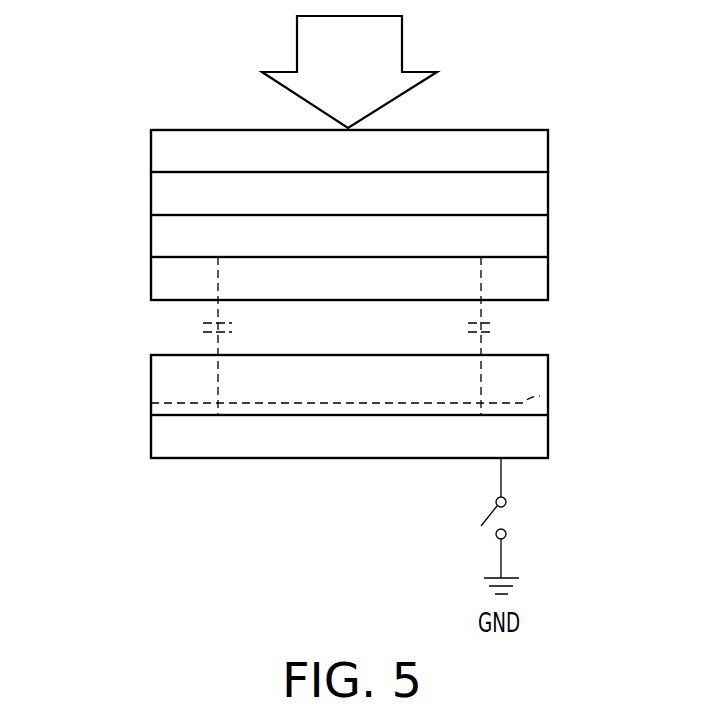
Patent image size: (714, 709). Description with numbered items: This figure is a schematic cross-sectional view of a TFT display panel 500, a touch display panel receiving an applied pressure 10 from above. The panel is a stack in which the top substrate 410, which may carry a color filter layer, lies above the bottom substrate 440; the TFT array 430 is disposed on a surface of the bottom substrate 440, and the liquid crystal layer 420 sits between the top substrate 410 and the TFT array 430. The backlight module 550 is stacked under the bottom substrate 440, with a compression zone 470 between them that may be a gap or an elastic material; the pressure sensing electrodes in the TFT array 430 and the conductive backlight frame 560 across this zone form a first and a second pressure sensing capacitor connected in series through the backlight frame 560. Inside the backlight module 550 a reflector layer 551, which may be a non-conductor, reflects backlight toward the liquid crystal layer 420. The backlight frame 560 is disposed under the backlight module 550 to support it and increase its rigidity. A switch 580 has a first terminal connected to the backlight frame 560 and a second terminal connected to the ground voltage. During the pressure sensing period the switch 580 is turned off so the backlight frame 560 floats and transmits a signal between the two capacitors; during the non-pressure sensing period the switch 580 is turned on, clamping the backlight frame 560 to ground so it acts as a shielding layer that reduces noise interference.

The pressure (external force) 10 is at (402, 45).
The TFT display panel 500 is at (125, 547).
The top substrate 410 is at (552, 152).
The liquid crystal layer 420 is at (552, 194).
The TFT array 430 is at (552, 236).
The bottom substrate 440 is at (552, 278).
The compression zone 470 is at (556, 300).
The backlight module 550 is at (552, 373).
The reflector layer 551 is at (540, 396).
The backlight frame 560 is at (552, 438).
The switch 580 is at (513, 520).